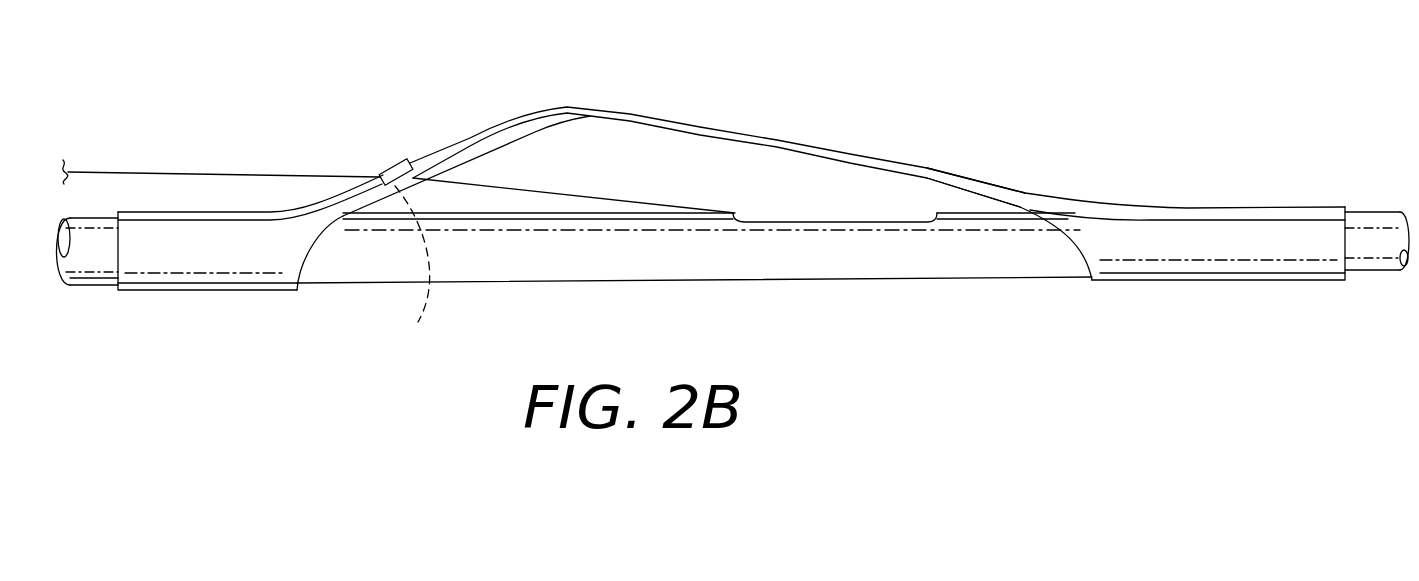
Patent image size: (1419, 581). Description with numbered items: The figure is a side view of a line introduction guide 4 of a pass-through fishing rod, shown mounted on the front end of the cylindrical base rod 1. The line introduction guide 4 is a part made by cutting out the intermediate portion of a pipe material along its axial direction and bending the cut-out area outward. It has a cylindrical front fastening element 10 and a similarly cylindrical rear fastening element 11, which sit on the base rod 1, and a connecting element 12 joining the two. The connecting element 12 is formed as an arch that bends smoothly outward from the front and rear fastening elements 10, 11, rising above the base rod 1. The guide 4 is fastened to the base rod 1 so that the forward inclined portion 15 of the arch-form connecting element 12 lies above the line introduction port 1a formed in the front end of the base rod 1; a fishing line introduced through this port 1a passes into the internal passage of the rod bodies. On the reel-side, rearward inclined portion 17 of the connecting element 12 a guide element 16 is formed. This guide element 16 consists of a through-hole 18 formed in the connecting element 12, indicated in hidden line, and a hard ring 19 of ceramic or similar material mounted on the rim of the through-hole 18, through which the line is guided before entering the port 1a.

The base rod 1 is at (697, 273).
The line introduction port 1a is at (908, 212).
The line introduction guide 4 is at (737, 126).
The front fastening element 10 is at (1250, 212).
The rear fastening element 11 is at (237, 273).
The connecting element 12 is at (636, 114).
The forward inclined portion 15 is at (929, 163).
The guide element 16 is at (398, 156).
The rearward inclined portion 17 is at (487, 122).
The through-hole 18 is at (412, 272).
The hard ring 19 is at (379, 175).